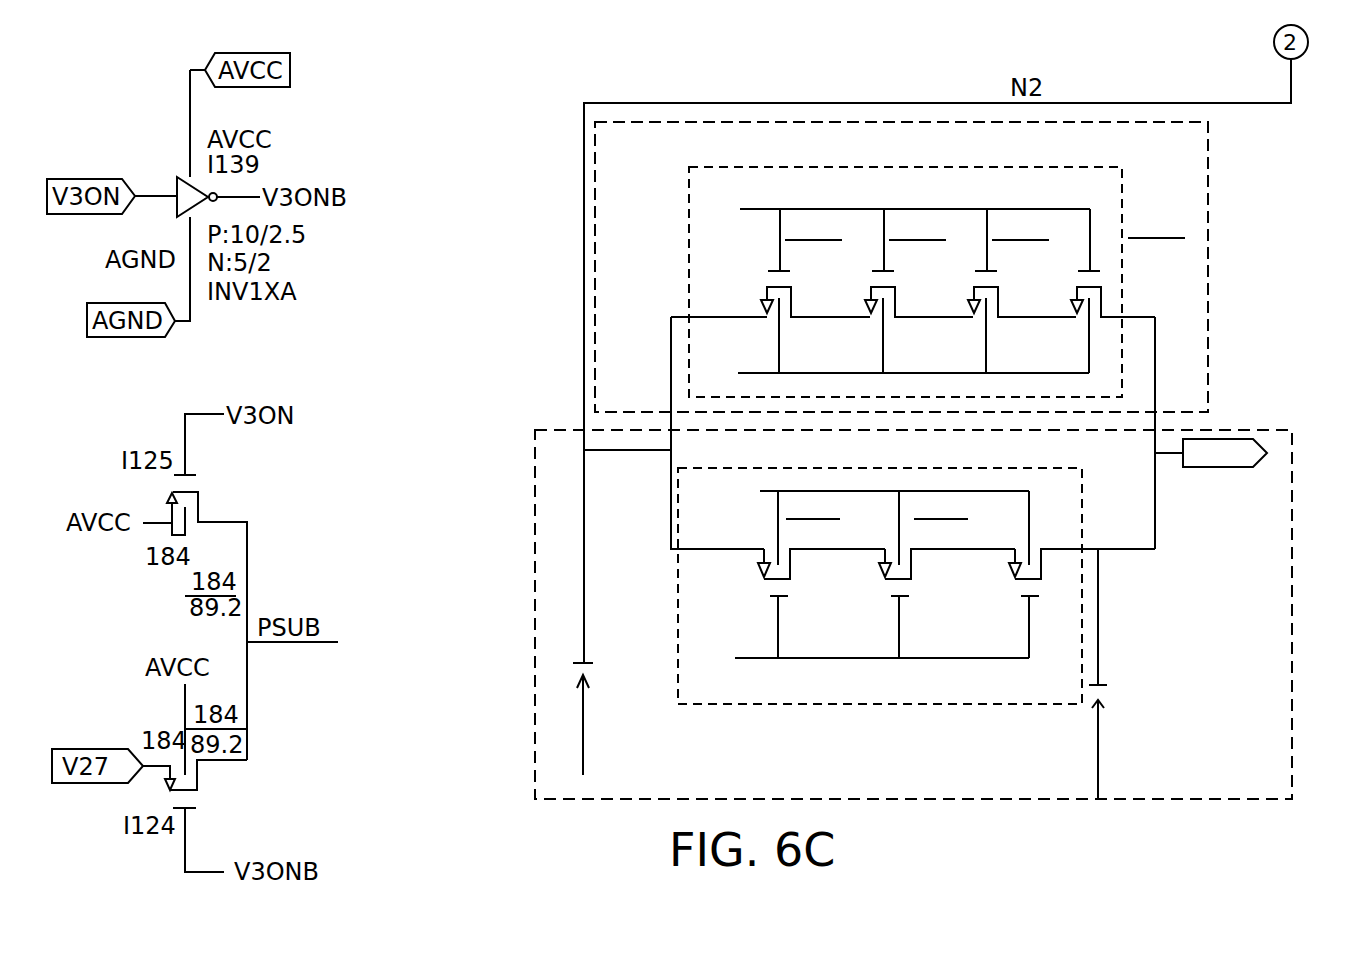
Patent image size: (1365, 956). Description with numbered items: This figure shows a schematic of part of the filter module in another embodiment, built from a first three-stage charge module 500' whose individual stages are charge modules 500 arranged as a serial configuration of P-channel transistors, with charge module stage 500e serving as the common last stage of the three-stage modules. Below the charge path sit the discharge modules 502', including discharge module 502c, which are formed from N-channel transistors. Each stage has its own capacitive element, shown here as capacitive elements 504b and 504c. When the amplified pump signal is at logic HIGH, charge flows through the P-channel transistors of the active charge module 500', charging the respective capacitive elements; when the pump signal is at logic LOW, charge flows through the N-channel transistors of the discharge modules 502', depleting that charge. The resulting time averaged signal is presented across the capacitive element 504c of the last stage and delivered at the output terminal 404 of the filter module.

The output terminal 404 is at (1231, 470).
The charge module 500 is at (950, 614).
The first three-stage charge module 500' is at (887, 610).
The charge module stage 500e is at (853, 704).
The discharge module 502' is at (939, 267).
The discharge module 502c is at (1122, 310).
The capacitive element 504b is at (583, 697).
The capacitive element 504c is at (1105, 730).